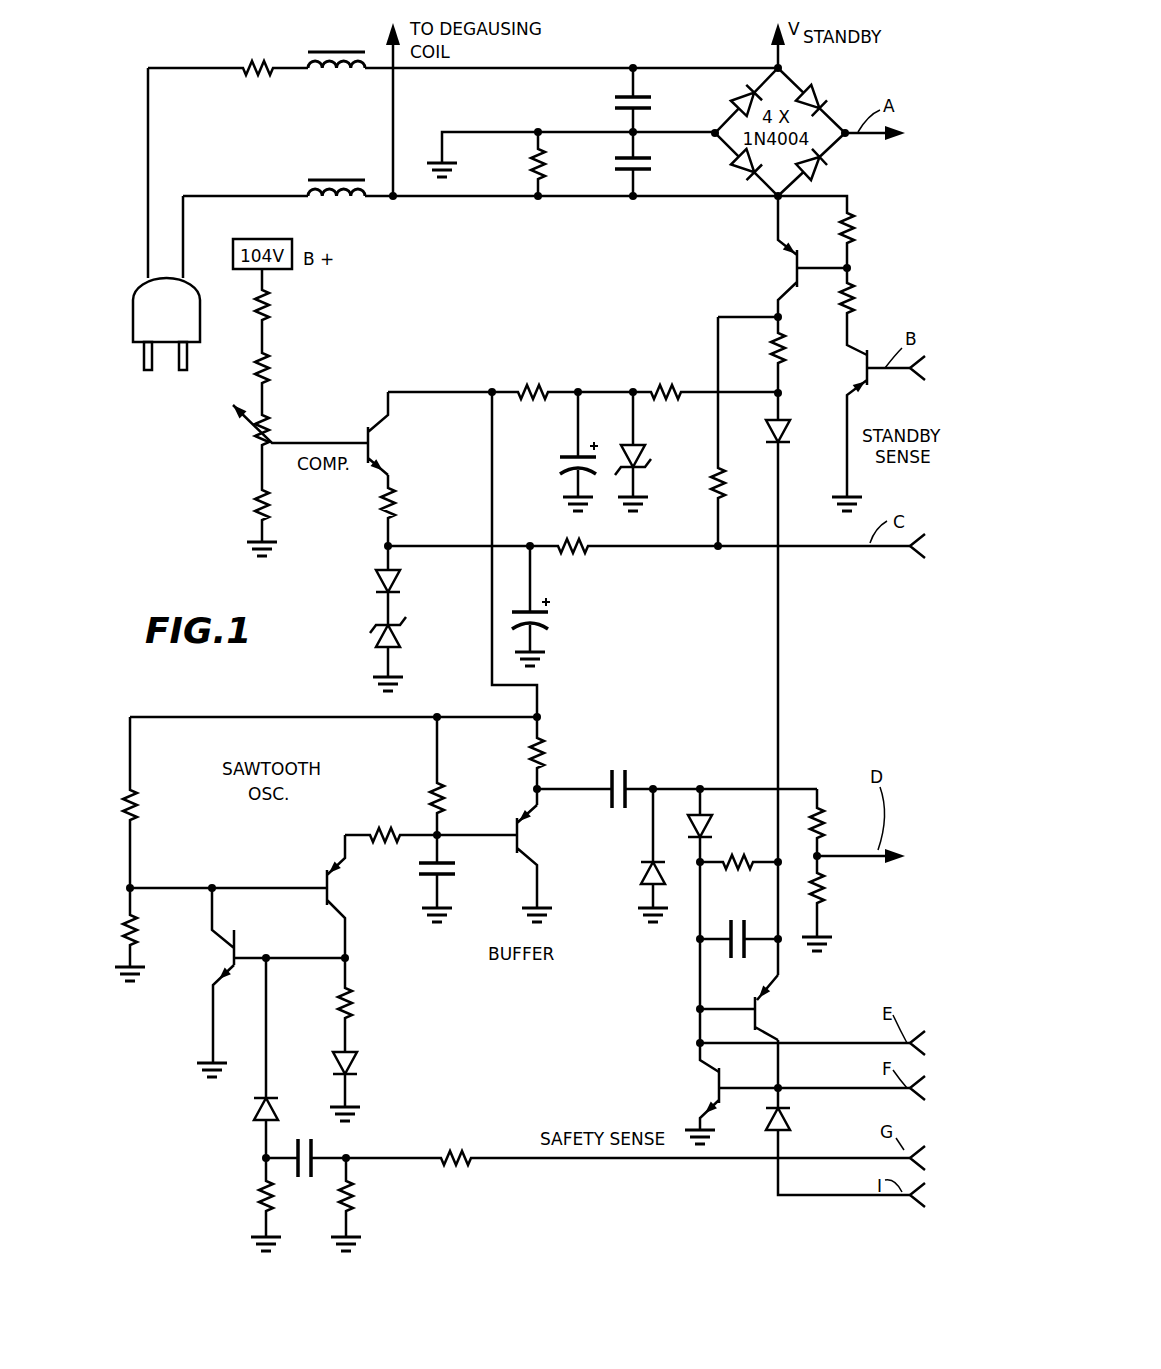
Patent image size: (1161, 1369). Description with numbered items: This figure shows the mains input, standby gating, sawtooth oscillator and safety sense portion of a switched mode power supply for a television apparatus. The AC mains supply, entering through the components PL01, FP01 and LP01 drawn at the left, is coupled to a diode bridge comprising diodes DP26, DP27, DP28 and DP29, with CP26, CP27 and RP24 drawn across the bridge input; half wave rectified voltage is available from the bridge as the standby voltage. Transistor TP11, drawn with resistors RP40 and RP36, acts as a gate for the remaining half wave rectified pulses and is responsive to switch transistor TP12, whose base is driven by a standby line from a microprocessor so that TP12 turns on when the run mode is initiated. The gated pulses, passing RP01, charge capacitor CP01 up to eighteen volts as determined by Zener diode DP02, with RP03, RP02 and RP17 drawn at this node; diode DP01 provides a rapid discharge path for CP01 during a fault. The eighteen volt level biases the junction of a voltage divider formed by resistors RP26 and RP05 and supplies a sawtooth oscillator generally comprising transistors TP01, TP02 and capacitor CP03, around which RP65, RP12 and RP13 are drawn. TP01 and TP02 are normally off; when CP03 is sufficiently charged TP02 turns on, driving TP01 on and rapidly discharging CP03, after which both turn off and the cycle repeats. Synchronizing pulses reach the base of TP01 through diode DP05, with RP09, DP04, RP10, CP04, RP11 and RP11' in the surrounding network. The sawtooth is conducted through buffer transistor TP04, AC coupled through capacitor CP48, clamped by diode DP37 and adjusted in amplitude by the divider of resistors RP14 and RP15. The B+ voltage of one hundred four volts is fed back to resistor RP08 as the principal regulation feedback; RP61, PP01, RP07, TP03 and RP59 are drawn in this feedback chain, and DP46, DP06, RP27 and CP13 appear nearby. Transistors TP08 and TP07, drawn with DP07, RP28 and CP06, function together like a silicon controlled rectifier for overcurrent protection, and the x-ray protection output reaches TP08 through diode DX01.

The fuse FP01 is at (248, 92).
The line filter inductors LP01 is at (336, 124).
The mains plug PL01 is at (166, 337).
The capacitor CP26 is at (608, 99).
The capacitor CP27 is at (608, 165).
The resistor RP24 is at (514, 164).
The diode DP26 is at (737, 100).
The diode DP27 is at (822, 101).
The diode DP28 is at (737, 164).
The diode DP29 is at (821, 164).
The resistor RP40 is at (824, 234).
The resistor RP36 is at (873, 310).
The gate transistor TP11 is at (787, 256).
The switch transistor TP12 is at (855, 423).
The resistor RP01 is at (754, 355).
The diode DP01 is at (804, 443).
The resistor RP17 is at (744, 491).
The resistor RP08 is at (308, 308).
The resistor RP61 is at (308, 370).
The potentiometer PP01 is at (287, 438).
The resistor RP07 is at (308, 505).
The capacitor TP03 is at (414, 433).
The resistor RP59 is at (416, 506).
The resistor RP03 is at (533, 370).
The resistor RP02 is at (666, 370).
The capacitor CP01 is at (556, 457).
The Zener diode DP02 is at (661, 464).
The diode DP46 is at (364, 585).
The zener diode DP06 is at (416, 635).
The resistor RP27 is at (575, 569).
The electrolytic capacitor CP13 is at (557, 624).
The resistor RP26 is at (157, 806).
The resistor RP05 is at (157, 930).
The transistor TP02 is at (298, 896).
The transistor TP01 is at (263, 975).
The resistor RP65 is at (385, 861).
The resistor RP12 is at (414, 798).
The capacitor CP03 is at (464, 872).
The resistor RP13 is at (512, 756).
The buffer transistor TP04 is at (565, 856).
The capacitor CP48 is at (620, 764).
The diode DP37 is at (626, 883).
The diode DP07 is at (727, 824).
The resistor RP28 is at (740, 885).
The capacitor CP06 is at (732, 960).
The resistor RP14 is at (843, 826).
The resistor RP15 is at (843, 890).
The transistor TP07 is at (801, 1007).
The transistor TP08 is at (672, 1095).
The diode DX01 is at (803, 1122).
The resistor RP09 is at (373, 1004).
The diode DP04 is at (375, 1068).
The diode DP05 is at (241, 1115).
The resistor RP10 is at (240, 1198).
The capacitor CP04 is at (309, 1185).
The resistor RP11 is at (374, 1198).
The resistor RP11' is at (455, 1133).